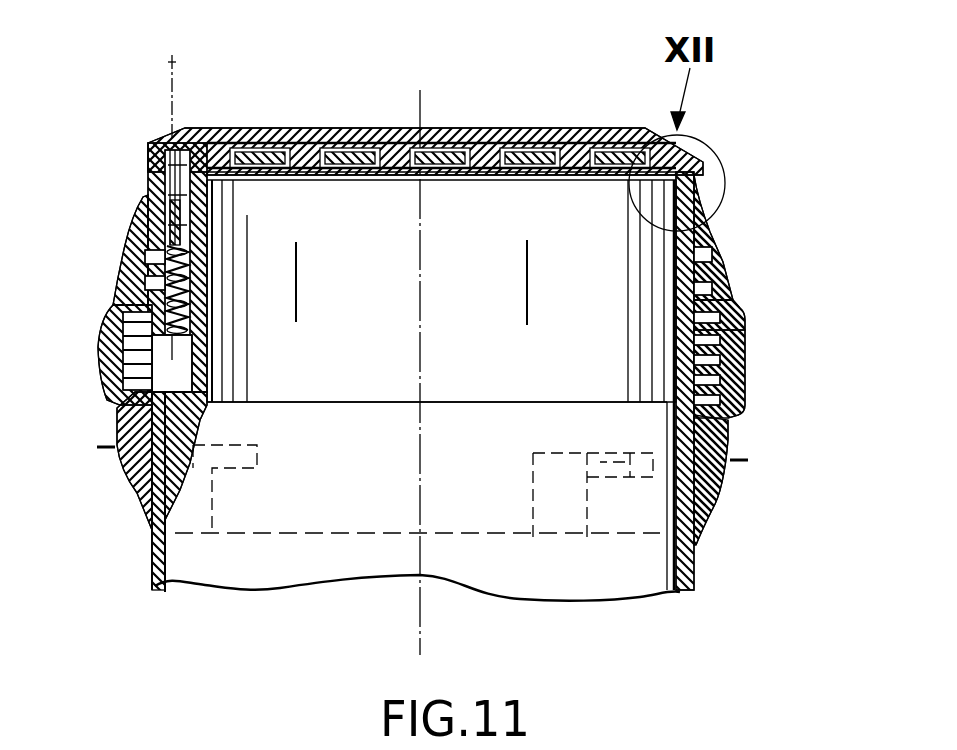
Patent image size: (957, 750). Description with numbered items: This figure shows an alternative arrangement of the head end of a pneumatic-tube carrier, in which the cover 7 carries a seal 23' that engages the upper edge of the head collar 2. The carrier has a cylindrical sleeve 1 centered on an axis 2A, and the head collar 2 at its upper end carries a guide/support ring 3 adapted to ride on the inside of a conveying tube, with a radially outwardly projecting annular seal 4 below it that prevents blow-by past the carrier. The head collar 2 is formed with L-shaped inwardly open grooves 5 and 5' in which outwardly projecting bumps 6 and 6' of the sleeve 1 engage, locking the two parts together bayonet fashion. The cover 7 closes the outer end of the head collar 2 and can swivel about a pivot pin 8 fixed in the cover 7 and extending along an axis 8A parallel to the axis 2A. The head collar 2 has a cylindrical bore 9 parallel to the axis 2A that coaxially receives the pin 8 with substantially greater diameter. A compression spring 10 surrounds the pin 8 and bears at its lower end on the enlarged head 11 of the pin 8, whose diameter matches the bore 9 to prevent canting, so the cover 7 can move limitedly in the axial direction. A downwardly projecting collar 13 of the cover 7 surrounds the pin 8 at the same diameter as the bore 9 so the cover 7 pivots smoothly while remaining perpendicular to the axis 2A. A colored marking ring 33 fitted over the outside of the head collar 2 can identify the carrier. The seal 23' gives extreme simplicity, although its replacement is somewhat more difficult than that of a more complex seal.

The sleeve 1 is at (698, 528).
The head collar 2 is at (742, 312).
The axis 2A is at (420, 112).
The guide/support ring 3 is at (747, 371).
The annular seal 4 is at (750, 458).
The groove 5 is at (152, 519).
The groove 5' is at (595, 556).
The bump 6 is at (417, 546).
The bump 6' is at (677, 544).
The cover 7 is at (460, 128).
The pivot pin 8 is at (113, 303).
The axis 8A is at (175, 62).
The cylindrical bore 9 is at (122, 257).
The compression spring 10 is at (100, 328).
The enlarged head 11 is at (100, 350).
The collar 13 is at (152, 197).
The seal 23' is at (716, 165).
The colored marking ring 33 is at (725, 264).